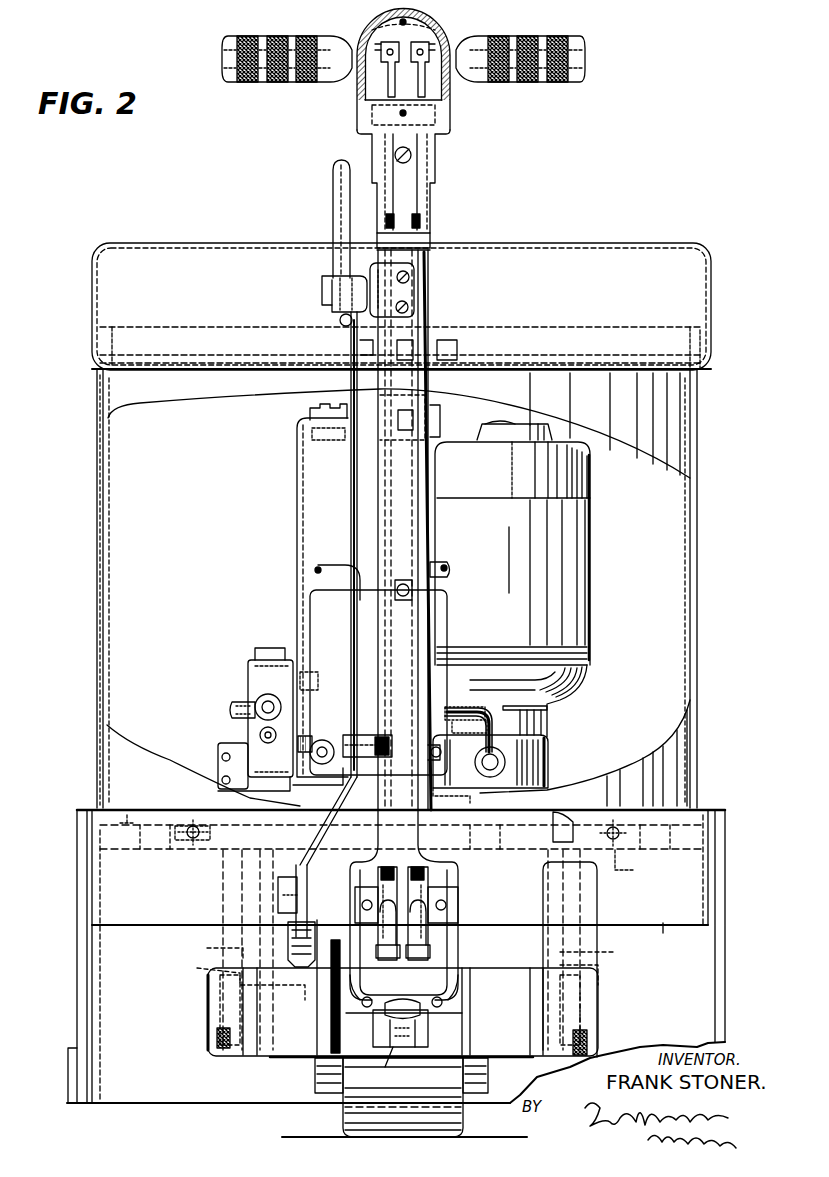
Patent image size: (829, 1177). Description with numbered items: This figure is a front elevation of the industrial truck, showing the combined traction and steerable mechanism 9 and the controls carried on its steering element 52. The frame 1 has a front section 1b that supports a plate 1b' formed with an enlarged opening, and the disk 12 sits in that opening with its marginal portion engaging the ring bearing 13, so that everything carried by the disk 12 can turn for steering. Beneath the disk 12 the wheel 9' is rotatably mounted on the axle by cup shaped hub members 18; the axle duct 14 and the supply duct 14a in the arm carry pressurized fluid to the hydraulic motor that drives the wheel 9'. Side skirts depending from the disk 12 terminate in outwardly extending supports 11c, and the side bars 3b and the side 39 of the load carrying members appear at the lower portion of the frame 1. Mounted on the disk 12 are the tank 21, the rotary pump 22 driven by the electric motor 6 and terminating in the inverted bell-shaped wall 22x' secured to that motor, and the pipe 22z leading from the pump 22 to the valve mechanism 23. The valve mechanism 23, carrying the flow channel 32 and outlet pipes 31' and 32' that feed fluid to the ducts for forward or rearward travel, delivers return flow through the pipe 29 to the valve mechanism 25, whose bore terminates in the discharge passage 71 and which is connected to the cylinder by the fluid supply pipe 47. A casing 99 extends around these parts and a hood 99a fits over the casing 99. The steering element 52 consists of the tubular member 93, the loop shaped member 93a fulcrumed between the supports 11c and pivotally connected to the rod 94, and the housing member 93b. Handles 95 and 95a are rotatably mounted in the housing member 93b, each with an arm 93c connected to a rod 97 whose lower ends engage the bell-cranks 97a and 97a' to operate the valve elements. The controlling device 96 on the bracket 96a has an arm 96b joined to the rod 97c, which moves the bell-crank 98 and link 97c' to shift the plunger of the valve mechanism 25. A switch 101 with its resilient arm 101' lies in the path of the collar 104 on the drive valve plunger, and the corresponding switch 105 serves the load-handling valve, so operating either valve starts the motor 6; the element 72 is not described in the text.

The frame 1 is at (396, 956).
The front section 1b is at (674, 936).
The plate 1b' is at (125, 835).
The side bars 3b is at (68, 1072).
The motor 6 is at (591, 623).
The combined traction and steerable mechanism 9 is at (404, 1097).
The wheel 9' is at (478, 1125).
The supports 11c is at (330, 998).
The disk 12 is at (622, 852).
The ring bearing 13 is at (618, 826).
The duct 14 is at (207, 950).
The supply duct 14a is at (401, 968).
The hub members 18 is at (290, 1060).
The tank 21 is at (296, 462).
The rotary pump 22 is at (575, 763).
The inverted bell-shaped wall 22x' is at (545, 701).
The pipe 22z is at (481, 700).
The valve mechanism 23 is at (338, 622).
The valve mechanism 25 is at (248, 668).
The pipe 29 is at (282, 705).
The pipe 31' is at (520, 700).
The flow channel 32 is at (198, 827).
The pipe 32' is at (310, 577).
The side 39 is at (77, 988).
The fluid supply pipe 47 is at (242, 703).
The steering element 52 is at (455, 424).
The discharge passage 71 is at (308, 670).
The pivot 72 is at (312, 746).
The tubular member 93 is at (432, 478).
The loop shaped member 93a is at (459, 873).
The housing member 93b is at (445, 130).
The arm 93c is at (432, 26).
The rod 94 is at (386, 1065).
The controlling device 95 is at (278, 84).
The controlling device 95a is at (528, 84).
The controlling device 96 is at (334, 205).
The bracket 96a is at (415, 268).
The arm 96b is at (330, 268).
The rod 97 is at (390, 216).
The bell-crank 97a is at (403, 922).
The bell-crank 97a' is at (401, 1011).
The rod 97c is at (336, 544).
The link 97c' is at (263, 857).
The bell-crank 98 is at (298, 969).
The casing 99 is at (698, 746).
The hood 99a is at (712, 300).
The switch 101 is at (456, 792).
The switch arm 101' is at (341, 770).
The collar 104 is at (442, 772).
The switch 105 is at (218, 760).